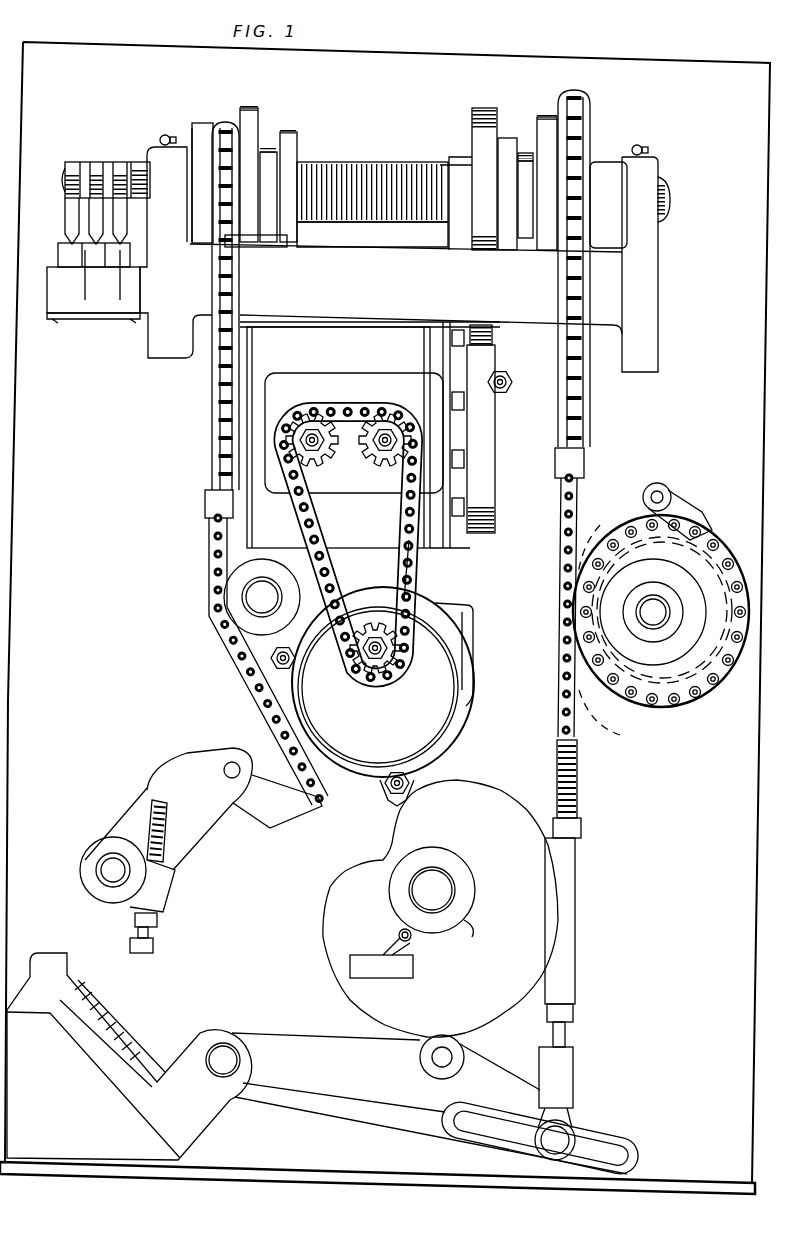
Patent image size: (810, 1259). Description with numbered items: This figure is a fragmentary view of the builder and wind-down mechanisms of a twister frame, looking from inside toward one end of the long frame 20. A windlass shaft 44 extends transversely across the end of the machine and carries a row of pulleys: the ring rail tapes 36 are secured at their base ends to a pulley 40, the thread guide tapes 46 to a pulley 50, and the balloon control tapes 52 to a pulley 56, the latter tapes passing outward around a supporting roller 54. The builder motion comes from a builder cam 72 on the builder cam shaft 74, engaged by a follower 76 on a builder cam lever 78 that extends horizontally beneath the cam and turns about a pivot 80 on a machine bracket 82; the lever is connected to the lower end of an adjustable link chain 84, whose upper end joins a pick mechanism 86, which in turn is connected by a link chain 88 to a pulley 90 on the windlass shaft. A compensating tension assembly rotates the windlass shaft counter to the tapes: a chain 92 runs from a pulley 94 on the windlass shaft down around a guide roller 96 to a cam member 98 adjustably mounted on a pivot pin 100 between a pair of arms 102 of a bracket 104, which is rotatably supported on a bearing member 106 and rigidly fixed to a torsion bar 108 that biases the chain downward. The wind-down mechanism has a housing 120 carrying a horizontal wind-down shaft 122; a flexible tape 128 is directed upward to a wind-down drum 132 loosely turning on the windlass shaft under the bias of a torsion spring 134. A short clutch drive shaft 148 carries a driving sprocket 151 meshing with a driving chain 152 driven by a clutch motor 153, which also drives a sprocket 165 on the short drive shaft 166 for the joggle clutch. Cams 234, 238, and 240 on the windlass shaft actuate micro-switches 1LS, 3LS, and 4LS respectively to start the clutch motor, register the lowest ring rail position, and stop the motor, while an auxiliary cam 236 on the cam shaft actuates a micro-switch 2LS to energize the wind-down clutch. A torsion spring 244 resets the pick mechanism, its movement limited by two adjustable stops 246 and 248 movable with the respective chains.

The frame 20 is at (766, 416).
The tape 36 is at (247, 108).
The pulley 40 is at (283, 131).
The windlass shaft 44 is at (668, 197).
The tape 46 is at (270, 148).
The pulley 50 is at (272, 243).
The tape 52 is at (298, 145).
The supporting roller 54 is at (375, 676).
The pulley 56 is at (505, 150).
The builder cam 72 is at (484, 803).
The builder cam shaft 74 is at (440, 888).
The follower 76 is at (466, 1052).
The builder cam lever 78 is at (310, 1040).
The pivot 80 is at (223, 1044).
The machine bracket 82 is at (200, 1118).
The adjustable link chain 84 is at (573, 742).
The pick mechanism 86 is at (703, 714).
The link chain 88 is at (560, 432).
The pulley 90 is at (596, 104).
The chain 92 is at (204, 431).
The pulley 94 is at (220, 210).
The guide roller 96 is at (238, 612).
The cam member 98 is at (270, 826).
The pivot pin 100 is at (232, 762).
The arms 102 is at (147, 812).
The bracket 104 is at (164, 890).
The bearing member 106 is at (103, 860).
The torsion bar 108 is at (110, 872).
The housing 120 is at (363, 561).
The wind-down shaft 122 is at (505, 388).
The flexible tape 128 is at (488, 331).
The wind-down drum 132 is at (474, 127).
The torsion spring 134 is at (355, 162).
The clutch drive shaft 148 is at (413, 432).
The driving sprocket 151 is at (380, 420).
The driving chain 152 is at (414, 572).
The clutch motor 153 is at (430, 718).
The sprocket 165 is at (320, 418).
The short drive shaft 166 is at (312, 452).
The cam 234 is at (75, 160).
The auxiliary cam 236 is at (472, 937).
The cam 238 is at (96, 160).
The cam 240 is at (122, 160).
The torsion spring 244 is at (703, 520).
The adjustable stop 246 is at (605, 522).
The adjustable stop 248 is at (628, 730).
The micro-switch 1LS is at (62, 250).
The micro-switch 2LS is at (363, 958).
The limit switch 3LS is at (90, 264).
The micro-switch 4LS is at (118, 264).